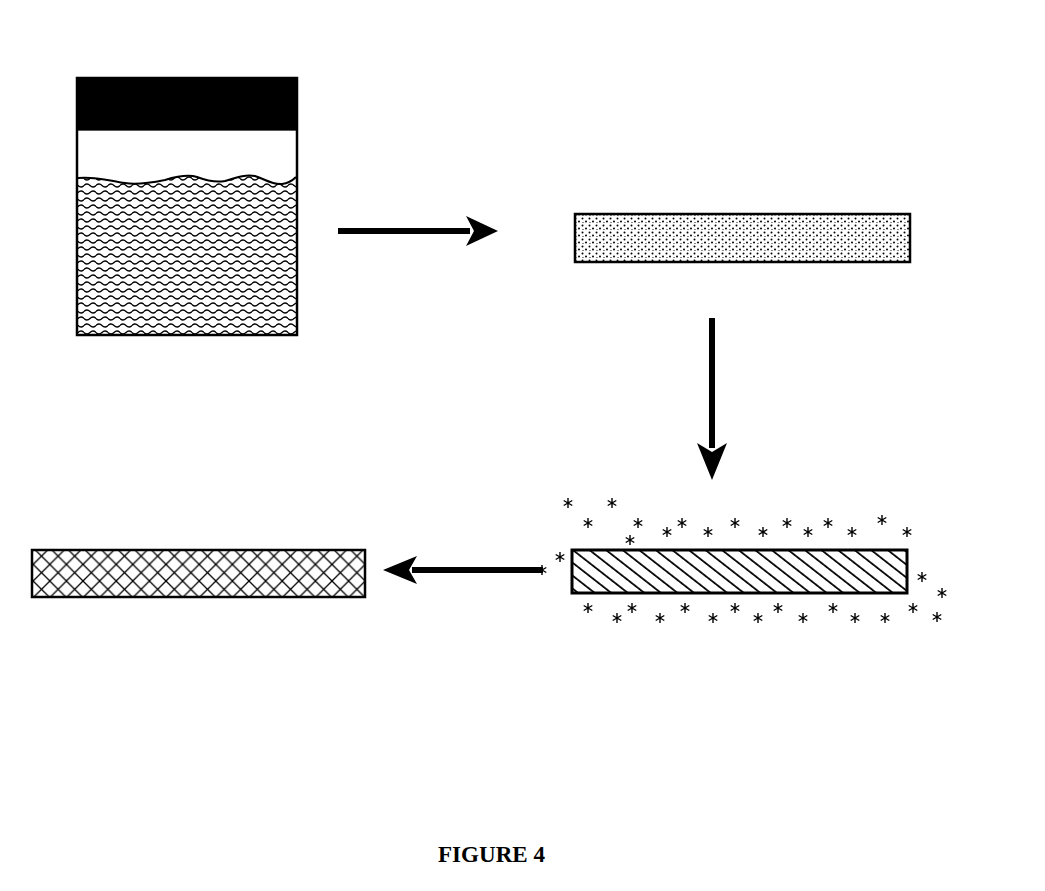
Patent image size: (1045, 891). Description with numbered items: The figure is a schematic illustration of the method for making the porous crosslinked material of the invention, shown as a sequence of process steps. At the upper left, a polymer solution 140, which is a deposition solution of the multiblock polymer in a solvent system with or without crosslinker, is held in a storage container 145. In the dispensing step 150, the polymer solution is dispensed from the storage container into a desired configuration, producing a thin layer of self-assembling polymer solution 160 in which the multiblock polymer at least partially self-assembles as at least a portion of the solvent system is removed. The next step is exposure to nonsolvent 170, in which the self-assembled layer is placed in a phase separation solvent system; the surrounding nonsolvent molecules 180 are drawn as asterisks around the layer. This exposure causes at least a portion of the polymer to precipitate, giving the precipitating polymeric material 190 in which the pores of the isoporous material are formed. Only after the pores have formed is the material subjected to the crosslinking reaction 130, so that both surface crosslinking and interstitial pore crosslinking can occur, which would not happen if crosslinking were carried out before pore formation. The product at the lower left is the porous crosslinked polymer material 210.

The crosslinking reaction 130 is at (463, 547).
The polymer solution 140 is at (162, 275).
The storage container 145 is at (297, 148).
The dispensing step 150 is at (418, 212).
The self-assembling polymer solution 160 is at (850, 214).
The exposure to nonsolvent 170 is at (745, 399).
The nonsolvent molecule 180 is at (880, 522).
The precipitating polymeric material 190 is at (597, 568).
The porous crosslinked polymer material 210 is at (228, 580).